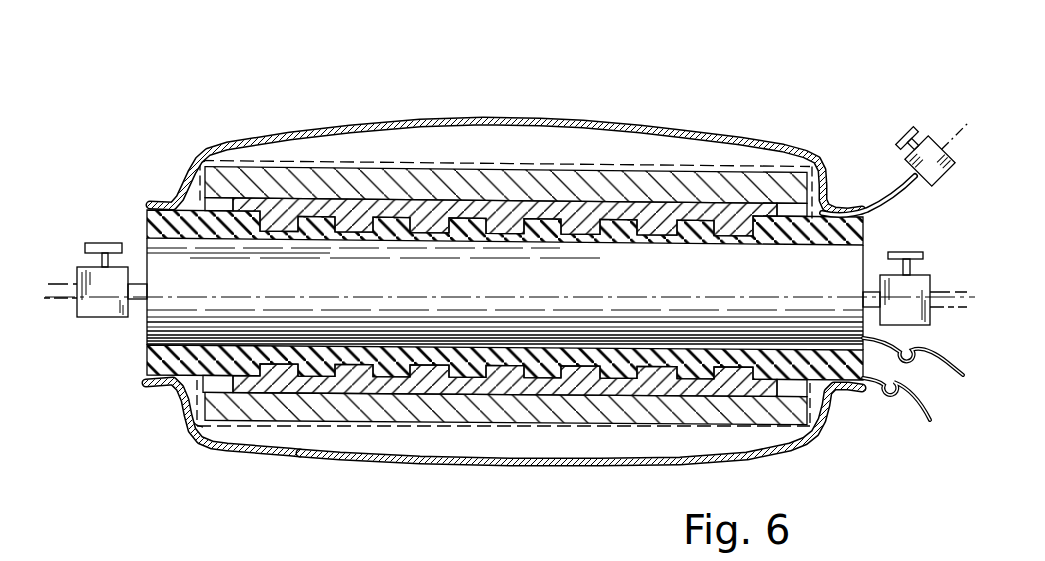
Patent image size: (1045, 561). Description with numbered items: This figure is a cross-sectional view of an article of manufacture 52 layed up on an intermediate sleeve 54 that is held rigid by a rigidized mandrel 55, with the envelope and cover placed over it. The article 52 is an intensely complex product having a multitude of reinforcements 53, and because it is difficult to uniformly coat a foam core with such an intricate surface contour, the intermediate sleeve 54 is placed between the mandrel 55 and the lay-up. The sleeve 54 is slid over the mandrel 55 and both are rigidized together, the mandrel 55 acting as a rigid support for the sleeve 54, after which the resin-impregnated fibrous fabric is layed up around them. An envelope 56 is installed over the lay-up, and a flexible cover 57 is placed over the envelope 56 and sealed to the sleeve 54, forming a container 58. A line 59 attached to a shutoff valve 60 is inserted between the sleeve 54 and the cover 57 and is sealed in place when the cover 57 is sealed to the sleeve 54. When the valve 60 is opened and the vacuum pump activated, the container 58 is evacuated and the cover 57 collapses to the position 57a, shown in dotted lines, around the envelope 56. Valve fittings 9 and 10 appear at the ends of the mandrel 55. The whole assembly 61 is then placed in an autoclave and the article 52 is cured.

The inlet valve 9 is at (98, 318).
The outlet valve 10 is at (917, 252).
The article of manufacture 52 is at (273, 190).
The reinforcements 53 is at (487, 238).
The intermediate sleeve 54 is at (585, 240).
The mandrel 55 is at (382, 279).
The envelope 56 is at (728, 168).
The flexible cover 57 is at (227, 453).
The collapsed position of cover 57a is at (297, 430).
The container 58 is at (400, 447).
The line 59 is at (885, 199).
The shutoff valve 60 is at (905, 130).
The assembly 61 is at (356, 94).